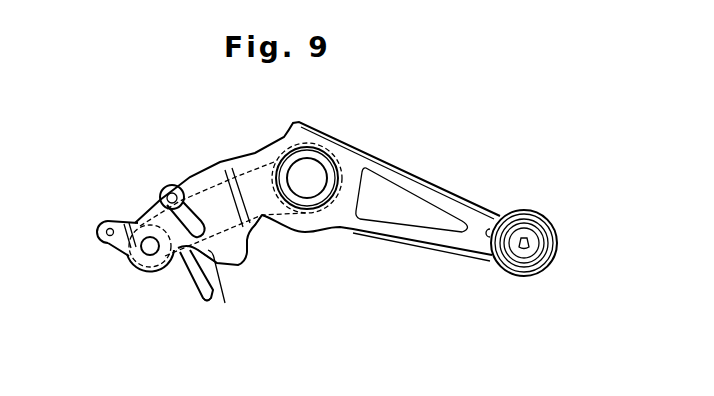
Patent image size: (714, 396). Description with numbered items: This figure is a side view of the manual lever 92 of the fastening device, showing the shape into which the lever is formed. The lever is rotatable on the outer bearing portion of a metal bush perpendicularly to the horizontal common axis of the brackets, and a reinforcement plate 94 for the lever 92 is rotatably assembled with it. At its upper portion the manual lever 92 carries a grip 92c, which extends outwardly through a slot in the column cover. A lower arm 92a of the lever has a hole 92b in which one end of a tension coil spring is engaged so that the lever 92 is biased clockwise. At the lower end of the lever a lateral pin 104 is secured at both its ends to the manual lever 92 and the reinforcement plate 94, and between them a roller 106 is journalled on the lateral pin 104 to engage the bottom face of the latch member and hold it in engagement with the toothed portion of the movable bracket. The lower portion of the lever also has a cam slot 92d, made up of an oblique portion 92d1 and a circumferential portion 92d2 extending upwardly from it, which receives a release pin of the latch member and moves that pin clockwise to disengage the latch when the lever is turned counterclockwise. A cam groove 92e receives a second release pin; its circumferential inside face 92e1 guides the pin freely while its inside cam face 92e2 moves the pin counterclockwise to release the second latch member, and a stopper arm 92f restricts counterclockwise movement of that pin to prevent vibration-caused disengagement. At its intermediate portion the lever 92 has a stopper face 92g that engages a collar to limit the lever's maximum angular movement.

The manual lever 92 is at (413, 183).
The lower arm 92a is at (117, 243).
The hole 92b is at (109, 222).
The grip 92c is at (528, 238).
The cam slot 92d is at (200, 212).
The oblique portion 92d1 is at (173, 200).
The circumferential portion 92d2 is at (159, 192).
The cam groove 92e is at (193, 259).
The circumferential inside face 92e1 is at (233, 291).
The inside cam face 92e2 is at (218, 260).
The stopper arm 92f is at (204, 300).
The stopper face 92g is at (263, 217).
The reinforcement plate 94 is at (279, 150).
The lateral pin 104 is at (150, 246).
The roller 106 is at (140, 272).